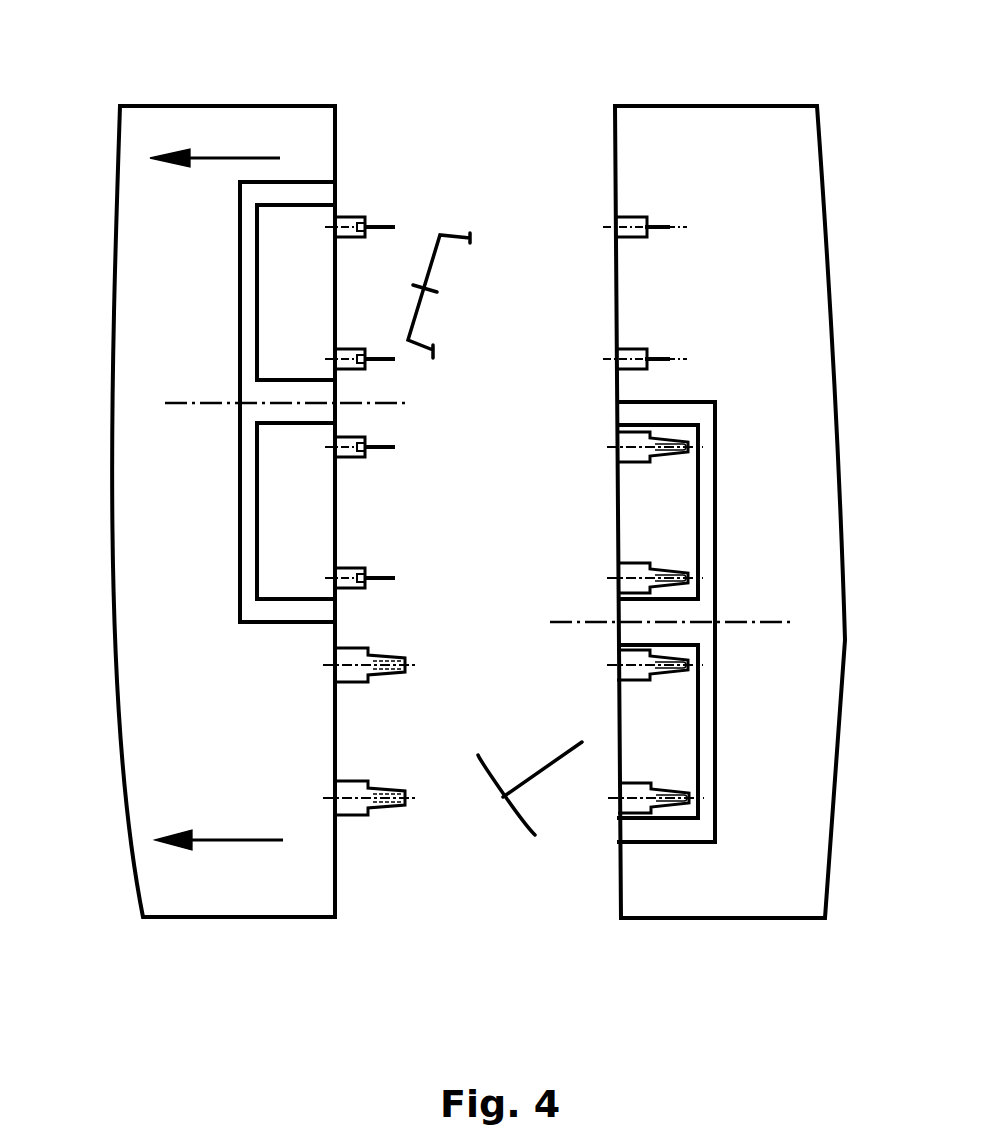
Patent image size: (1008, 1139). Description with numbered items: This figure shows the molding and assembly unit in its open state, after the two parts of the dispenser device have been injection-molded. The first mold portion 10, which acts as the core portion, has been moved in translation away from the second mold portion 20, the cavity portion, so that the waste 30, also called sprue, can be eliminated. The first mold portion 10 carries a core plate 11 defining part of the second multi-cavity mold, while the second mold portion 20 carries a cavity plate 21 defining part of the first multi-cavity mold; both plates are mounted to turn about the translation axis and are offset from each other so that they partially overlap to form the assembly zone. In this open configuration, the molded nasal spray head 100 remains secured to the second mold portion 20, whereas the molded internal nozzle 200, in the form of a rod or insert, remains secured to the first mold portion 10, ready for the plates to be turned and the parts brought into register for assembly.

The first mold portion 10 is at (206, 128).
The core plate 11 is at (248, 333).
The second mold portion 20 is at (714, 130).
The cavity plate 21 is at (715, 481).
The waste 30 is at (543, 748).
The nasal spray head 100 is at (615, 810).
The internal nozzle 200 is at (380, 218).